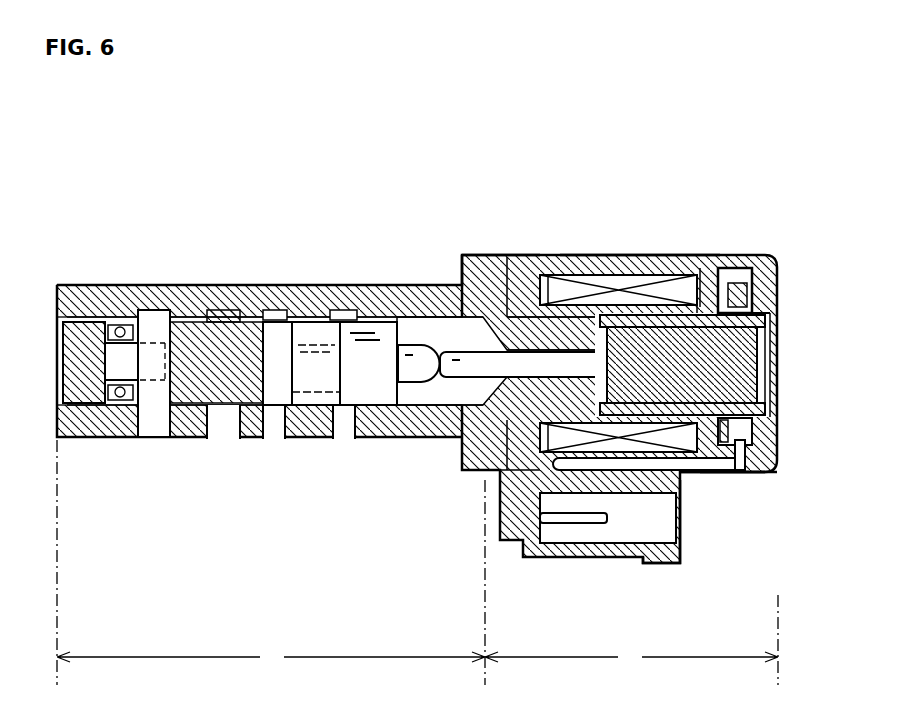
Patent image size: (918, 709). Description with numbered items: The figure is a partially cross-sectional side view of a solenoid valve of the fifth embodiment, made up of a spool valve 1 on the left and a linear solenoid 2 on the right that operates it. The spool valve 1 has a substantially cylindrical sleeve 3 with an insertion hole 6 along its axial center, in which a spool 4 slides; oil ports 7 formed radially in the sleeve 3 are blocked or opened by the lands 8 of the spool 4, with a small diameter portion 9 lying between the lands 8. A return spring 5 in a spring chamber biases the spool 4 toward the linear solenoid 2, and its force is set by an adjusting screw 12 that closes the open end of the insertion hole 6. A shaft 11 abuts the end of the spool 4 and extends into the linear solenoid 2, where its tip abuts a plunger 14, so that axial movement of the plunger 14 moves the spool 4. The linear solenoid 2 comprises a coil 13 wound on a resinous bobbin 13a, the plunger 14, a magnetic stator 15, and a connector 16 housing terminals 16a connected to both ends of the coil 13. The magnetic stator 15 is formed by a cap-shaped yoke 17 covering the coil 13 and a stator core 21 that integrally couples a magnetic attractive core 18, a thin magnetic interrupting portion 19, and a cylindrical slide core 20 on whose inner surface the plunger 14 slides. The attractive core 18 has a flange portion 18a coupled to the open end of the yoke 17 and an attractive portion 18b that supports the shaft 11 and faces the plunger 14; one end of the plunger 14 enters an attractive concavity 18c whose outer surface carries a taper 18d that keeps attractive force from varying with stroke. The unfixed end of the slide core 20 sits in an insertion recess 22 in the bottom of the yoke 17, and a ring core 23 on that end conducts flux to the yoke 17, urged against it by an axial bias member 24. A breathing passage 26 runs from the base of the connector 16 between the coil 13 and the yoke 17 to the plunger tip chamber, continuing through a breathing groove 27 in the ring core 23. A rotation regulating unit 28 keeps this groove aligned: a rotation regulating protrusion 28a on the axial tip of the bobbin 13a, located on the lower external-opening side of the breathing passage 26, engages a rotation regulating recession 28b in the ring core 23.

The spool valve 1 is at (271, 562).
The linear solenoid 2 is at (631, 640).
The sleeve 3 is at (103, 294).
The spool 4 is at (413, 355).
The return spring 5 is at (162, 340).
The insertion hole 6 is at (187, 330).
The oil ports 7 is at (343, 441).
The lands 8 is at (262, 337).
The small diameter portion 9 is at (305, 345).
The shaft 11 is at (470, 370).
The adjusting screw 12 is at (93, 441).
The coil 13 is at (652, 493).
The bobbin 13a is at (680, 477).
The plunger 14 is at (743, 350).
The magnetic stator 15 is at (636, 118).
The connector 16 is at (612, 580).
The terminals 16a is at (567, 527).
The yoke 17 is at (737, 258).
The magnetic attractive core 18 is at (450, 207).
The flange portion 18a is at (492, 252).
The attractive portion 18b is at (528, 252).
The attractive concavity 18c is at (587, 252).
The taper 18d is at (632, 252).
The magnetic interrupting portion 19 is at (667, 252).
The slide core 20 is at (700, 253).
The stator core 21 is at (547, 163).
The insertion recess 22 is at (762, 305).
The ring core 23 is at (760, 268).
The axial bias member 24 is at (770, 258).
The breathing passage 26 is at (683, 470).
The breathing groove 27 is at (768, 290).
The rotation regulating unit 28 is at (733, 578).
The rotation regulating protrusion 28a is at (728, 474).
The rotation regulating recession 28b is at (768, 474).